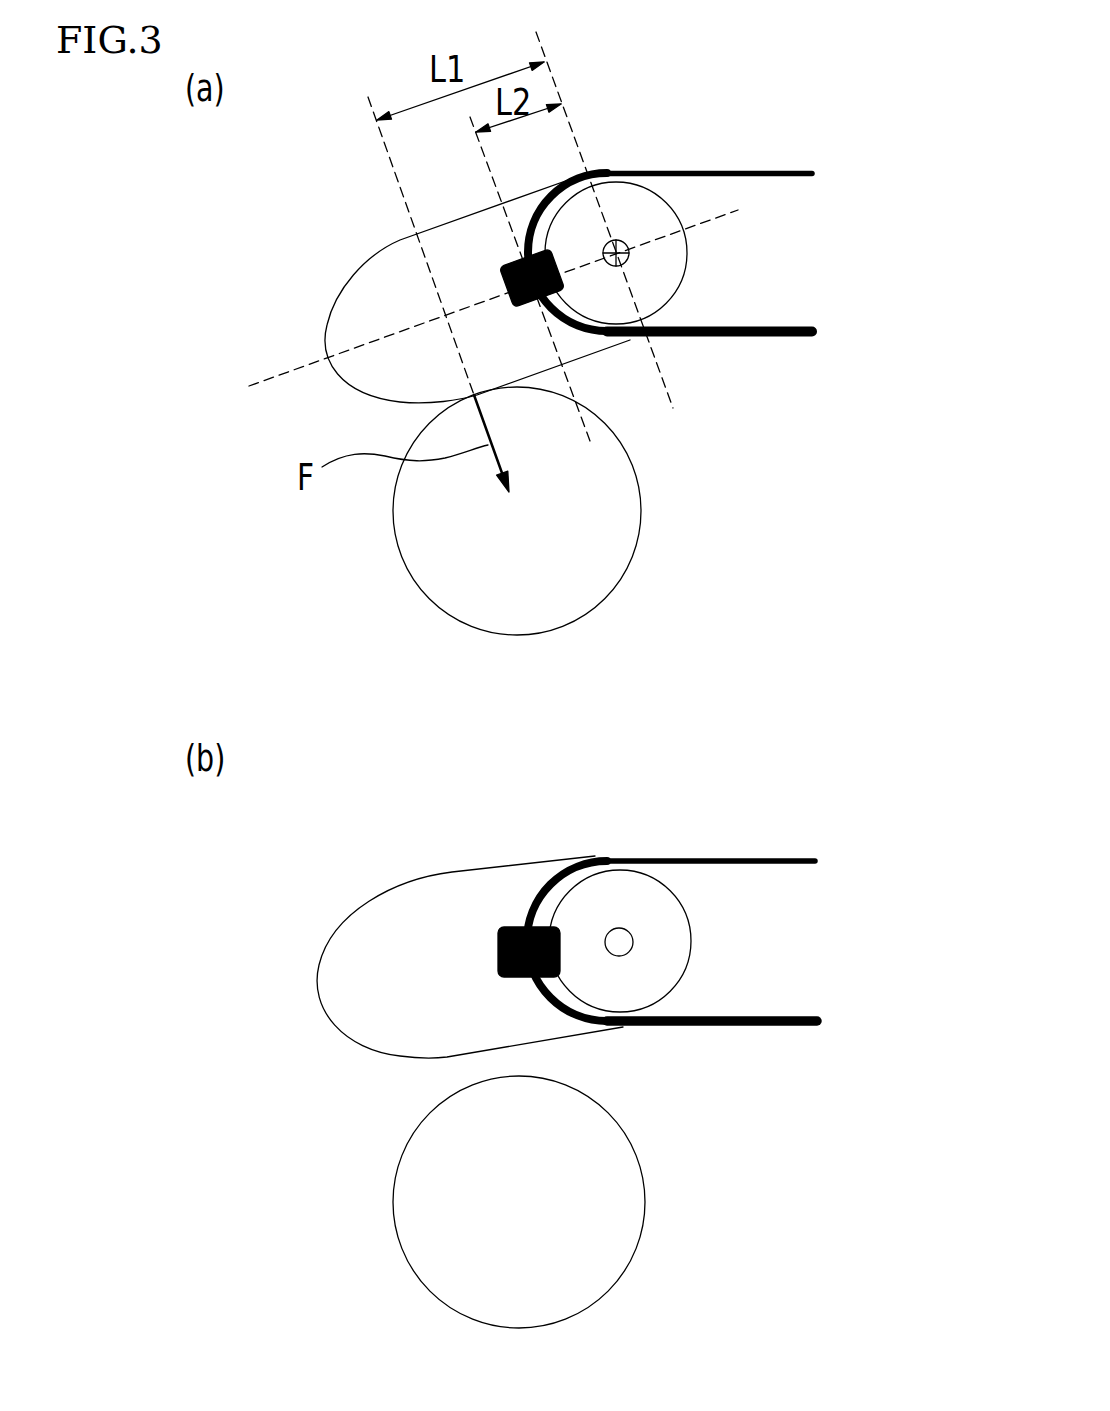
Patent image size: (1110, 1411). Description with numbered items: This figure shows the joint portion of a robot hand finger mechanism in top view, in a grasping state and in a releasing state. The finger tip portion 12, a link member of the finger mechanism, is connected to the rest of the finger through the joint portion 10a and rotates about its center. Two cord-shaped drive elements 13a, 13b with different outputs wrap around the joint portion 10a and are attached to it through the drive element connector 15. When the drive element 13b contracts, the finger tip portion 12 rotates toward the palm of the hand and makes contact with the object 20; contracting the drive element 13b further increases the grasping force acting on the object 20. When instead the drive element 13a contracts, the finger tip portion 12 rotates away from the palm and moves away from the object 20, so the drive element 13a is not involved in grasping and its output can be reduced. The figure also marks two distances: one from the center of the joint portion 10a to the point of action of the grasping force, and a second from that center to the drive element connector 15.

The finger tip portion 12 is at (340, 317).
The joint portion 10a is at (638, 207).
The drive element 13a is at (762, 170).
The drive element 13b is at (778, 338).
The drive element connector 15 is at (516, 308).
The object 20 is at (610, 538).